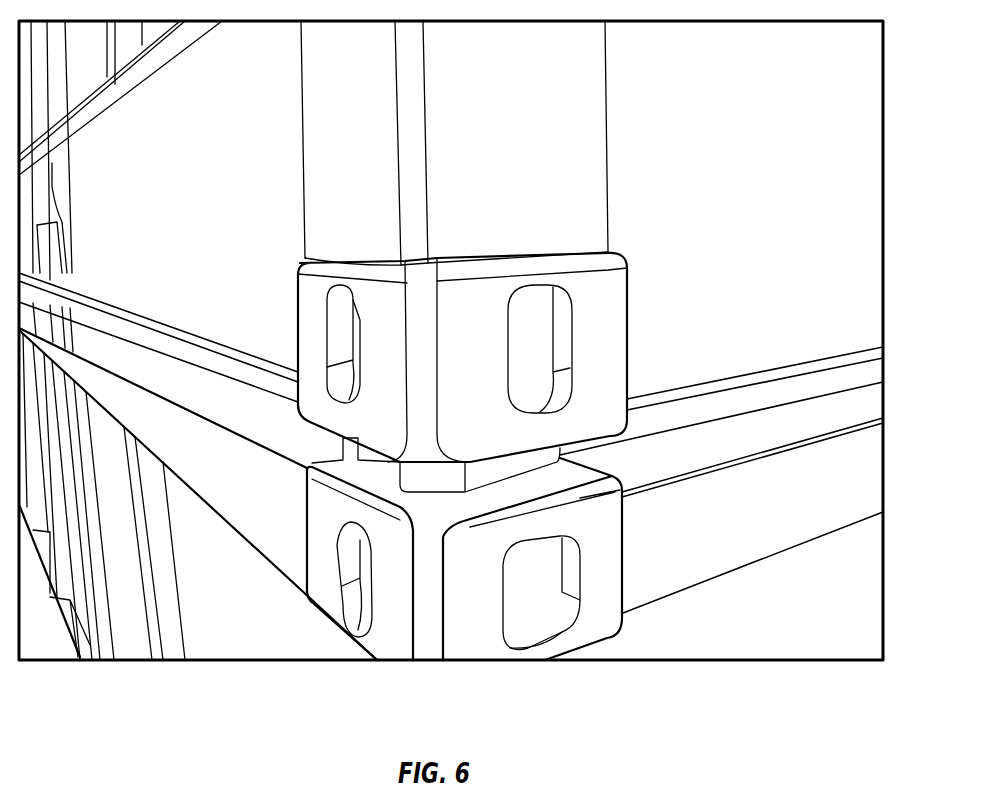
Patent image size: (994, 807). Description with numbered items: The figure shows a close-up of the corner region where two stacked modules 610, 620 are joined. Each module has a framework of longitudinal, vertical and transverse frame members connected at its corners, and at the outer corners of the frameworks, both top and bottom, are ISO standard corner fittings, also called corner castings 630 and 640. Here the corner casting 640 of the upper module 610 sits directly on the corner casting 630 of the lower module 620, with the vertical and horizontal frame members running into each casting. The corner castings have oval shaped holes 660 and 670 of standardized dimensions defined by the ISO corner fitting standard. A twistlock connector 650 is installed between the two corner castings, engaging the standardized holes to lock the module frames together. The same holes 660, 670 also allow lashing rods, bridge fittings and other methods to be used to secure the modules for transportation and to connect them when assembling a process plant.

The module 610 is at (885, 127).
The module 620 is at (885, 485).
The corner casting 630 is at (393, 650).
The corner casting 640 is at (312, 405).
The twistlock connector 650 is at (508, 463).
The hole 660 is at (350, 606).
The hole 670 is at (540, 610).